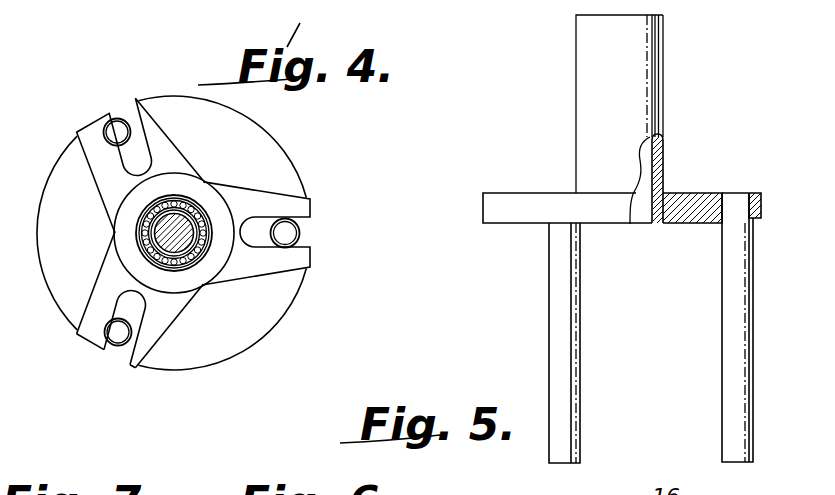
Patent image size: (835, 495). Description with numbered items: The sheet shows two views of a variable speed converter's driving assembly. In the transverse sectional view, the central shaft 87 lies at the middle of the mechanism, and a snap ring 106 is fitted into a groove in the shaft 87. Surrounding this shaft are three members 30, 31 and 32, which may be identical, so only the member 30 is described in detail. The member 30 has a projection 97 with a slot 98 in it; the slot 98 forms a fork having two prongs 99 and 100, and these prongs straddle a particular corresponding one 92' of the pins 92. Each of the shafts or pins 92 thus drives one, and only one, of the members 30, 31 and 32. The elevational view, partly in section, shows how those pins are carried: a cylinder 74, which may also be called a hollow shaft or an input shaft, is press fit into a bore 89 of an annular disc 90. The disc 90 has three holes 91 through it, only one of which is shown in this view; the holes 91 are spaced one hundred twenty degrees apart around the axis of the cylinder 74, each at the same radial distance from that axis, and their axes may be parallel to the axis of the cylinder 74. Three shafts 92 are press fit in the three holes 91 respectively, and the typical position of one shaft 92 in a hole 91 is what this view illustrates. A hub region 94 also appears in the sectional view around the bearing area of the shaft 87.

In FIG. 4, the member 30 is at (174, 342).
In FIG. 4, the member 31 is at (100, 176).
In FIG. 4, the member 32 is at (258, 270).
In FIG. 4, the shaft 87 is at (178, 226).
In FIG. 4, the hub 94 is at (207, 215).
In FIG. 4, the snap ring 106 is at (186, 213).
In FIG. 4, the shaft 92 is at (208, 165).
In FIG. 5, the shaft 92 is at (625, 328).
In FIG. 4, the pin 92' is at (100, 358).
In FIG. 4, the projection 97 is at (92, 298).
In FIG. 4, the slot 98 is at (145, 312).
In FIG. 4, the prong 99 is at (82, 342).
In FIG. 4, the prong 100 is at (124, 366).
In FIG. 5, the cylinder 74 is at (666, 168).
In FIG. 5, the bore 89 is at (652, 208).
In FIG. 5, the annular disc 90 is at (694, 182).
In FIG. 5, the hole 91 is at (747, 204).